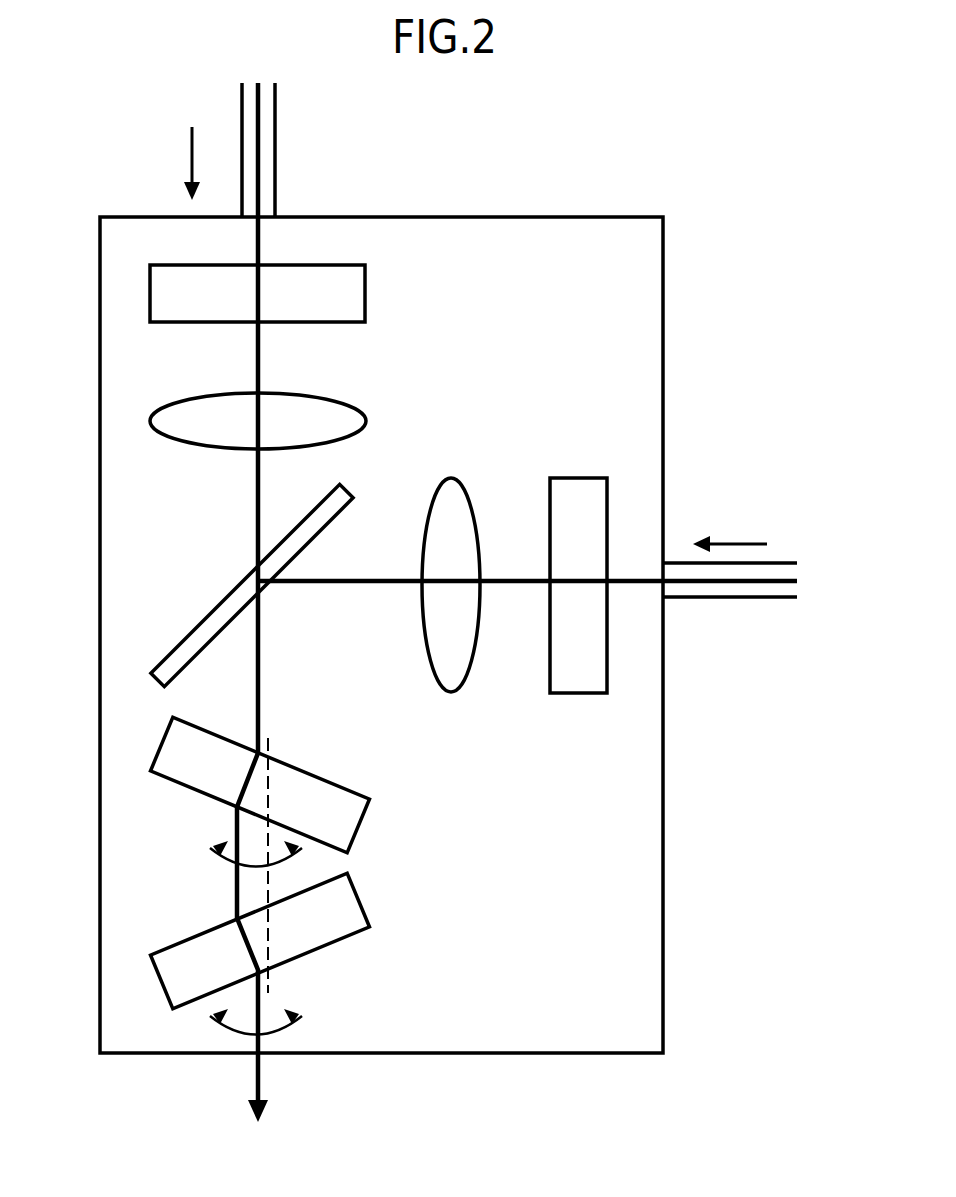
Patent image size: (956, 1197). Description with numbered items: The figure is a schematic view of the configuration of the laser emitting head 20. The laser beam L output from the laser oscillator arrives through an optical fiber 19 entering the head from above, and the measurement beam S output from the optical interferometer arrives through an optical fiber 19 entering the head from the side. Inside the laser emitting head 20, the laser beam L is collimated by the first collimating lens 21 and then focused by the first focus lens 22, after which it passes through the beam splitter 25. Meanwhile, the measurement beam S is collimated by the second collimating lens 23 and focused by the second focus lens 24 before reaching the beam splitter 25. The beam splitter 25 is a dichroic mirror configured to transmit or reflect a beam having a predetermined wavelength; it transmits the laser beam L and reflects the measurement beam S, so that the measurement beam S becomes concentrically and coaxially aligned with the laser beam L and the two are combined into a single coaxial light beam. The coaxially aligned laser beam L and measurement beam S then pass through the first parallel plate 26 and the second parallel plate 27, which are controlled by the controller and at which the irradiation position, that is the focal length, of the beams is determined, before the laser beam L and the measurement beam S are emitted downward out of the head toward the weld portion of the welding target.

The optical fiber 19 is at (275, 166).
The laser emitting head 20 is at (515, 215).
The first collimating lens 21 is at (365, 293).
The first focus lens 22 is at (367, 422).
The second collimating lens 23 is at (580, 695).
The second focus lens 24 is at (450, 693).
The beam splitter 25 is at (350, 497).
The first parallel plate 26 is at (363, 825).
The second parallel plate 27 is at (363, 900).
The laser beam L is at (262, 110).
The measurement beam S is at (768, 583).